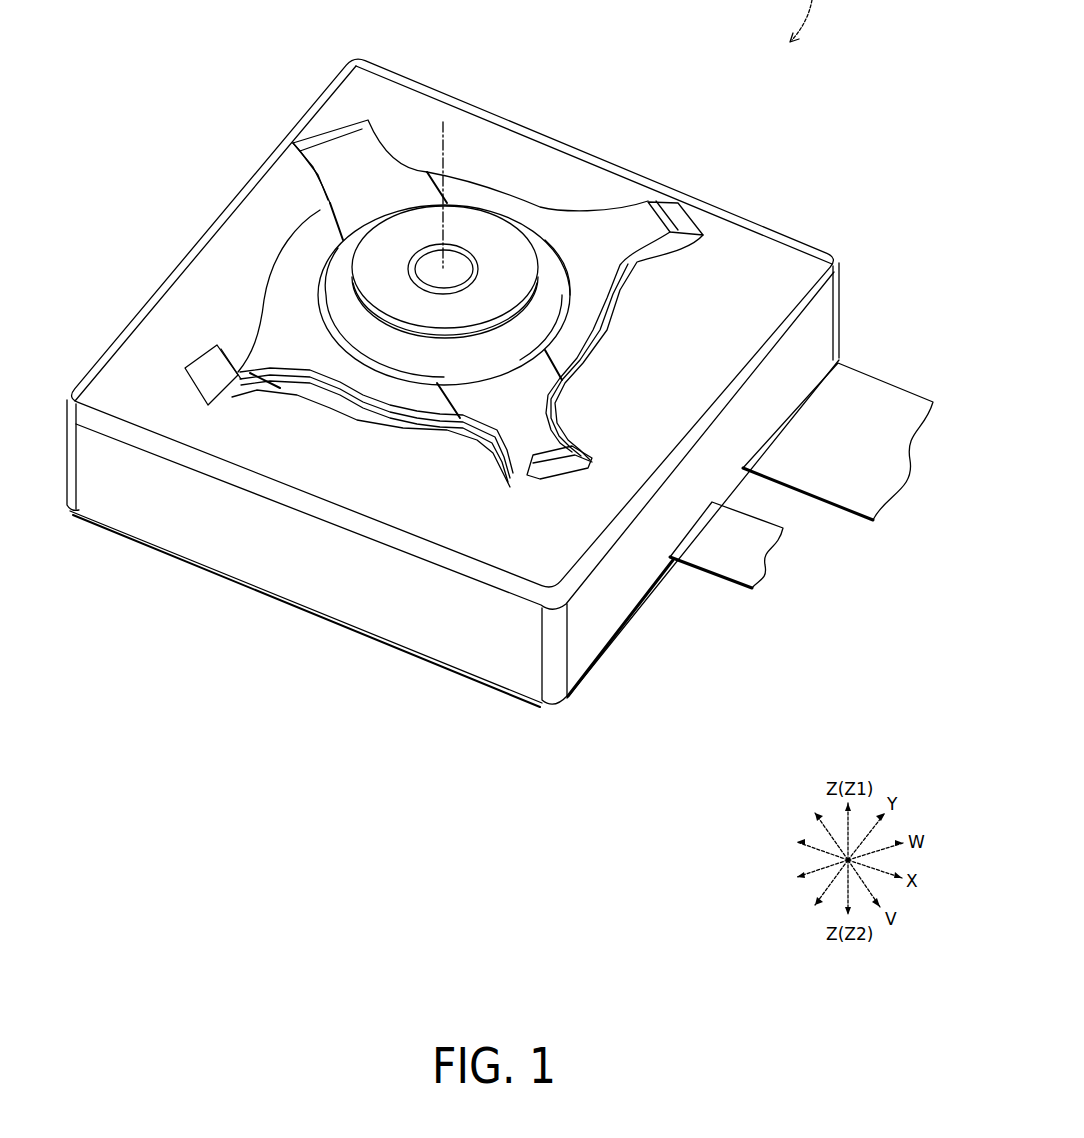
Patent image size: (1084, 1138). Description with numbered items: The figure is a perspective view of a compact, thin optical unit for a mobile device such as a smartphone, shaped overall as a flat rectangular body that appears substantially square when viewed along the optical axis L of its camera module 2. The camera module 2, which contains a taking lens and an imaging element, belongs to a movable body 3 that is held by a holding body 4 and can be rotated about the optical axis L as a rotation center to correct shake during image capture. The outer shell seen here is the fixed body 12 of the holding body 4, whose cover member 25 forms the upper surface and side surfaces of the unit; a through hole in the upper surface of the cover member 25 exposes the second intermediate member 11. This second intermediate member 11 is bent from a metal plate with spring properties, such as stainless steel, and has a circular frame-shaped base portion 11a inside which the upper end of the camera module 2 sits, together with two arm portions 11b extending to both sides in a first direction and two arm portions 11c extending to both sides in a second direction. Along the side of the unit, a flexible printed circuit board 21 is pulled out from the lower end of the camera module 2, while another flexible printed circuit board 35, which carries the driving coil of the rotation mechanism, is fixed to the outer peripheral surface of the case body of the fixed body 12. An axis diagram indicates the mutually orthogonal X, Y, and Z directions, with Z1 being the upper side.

The camera module 2 is at (505, 244).
The movable body 3 is at (443, 269).
The holding body 4 is at (368, 632).
The second intermediate member 11 is at (382, 412).
The base portion 11a is at (372, 427).
The arm portions 11b is at (372, 122).
The arm portions 11c is at (645, 200).
The fixed body 12 is at (150, 293).
The cover member 25 is at (454, 337).
The flexible printed circuit board 21 is at (878, 378).
The flexible printed circuit board 35 is at (716, 571).
The optical axis L is at (445, 133).